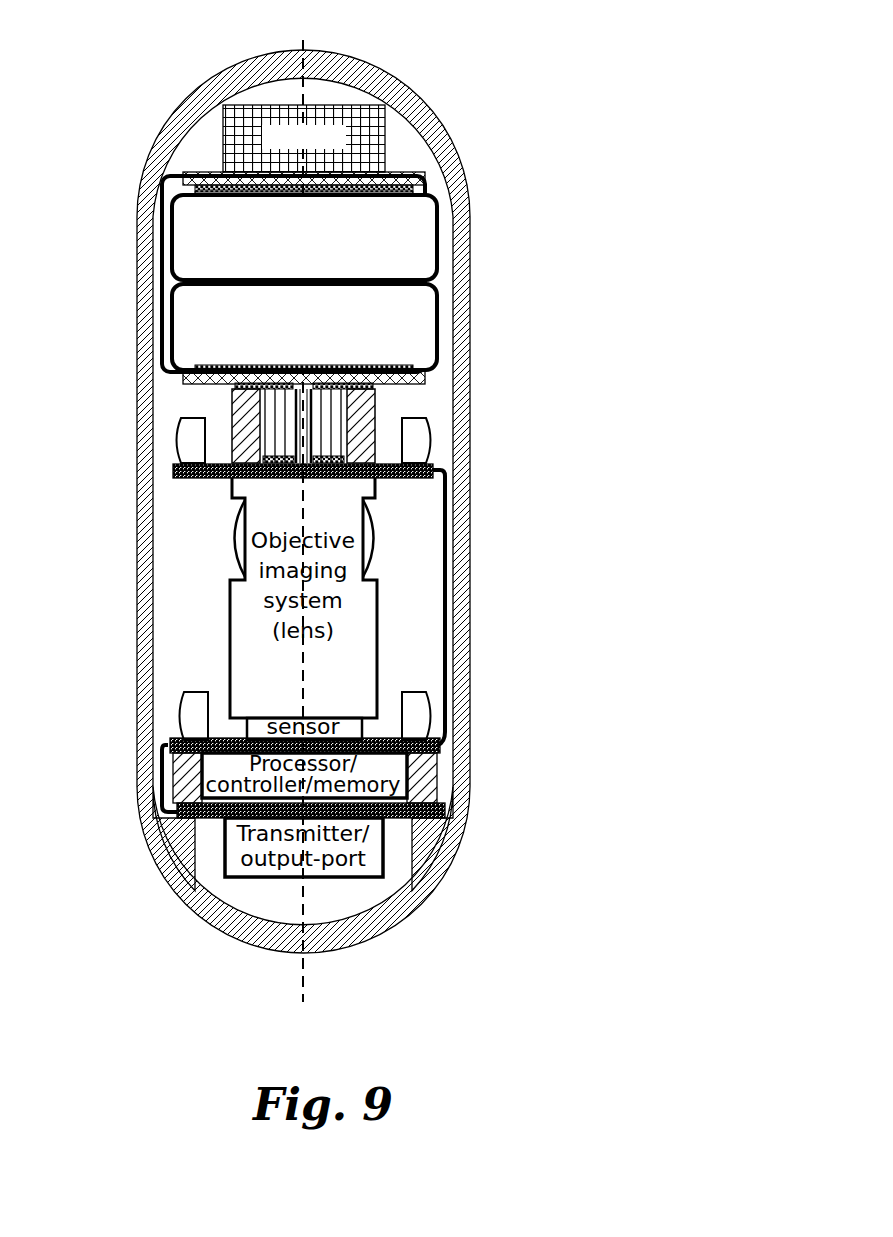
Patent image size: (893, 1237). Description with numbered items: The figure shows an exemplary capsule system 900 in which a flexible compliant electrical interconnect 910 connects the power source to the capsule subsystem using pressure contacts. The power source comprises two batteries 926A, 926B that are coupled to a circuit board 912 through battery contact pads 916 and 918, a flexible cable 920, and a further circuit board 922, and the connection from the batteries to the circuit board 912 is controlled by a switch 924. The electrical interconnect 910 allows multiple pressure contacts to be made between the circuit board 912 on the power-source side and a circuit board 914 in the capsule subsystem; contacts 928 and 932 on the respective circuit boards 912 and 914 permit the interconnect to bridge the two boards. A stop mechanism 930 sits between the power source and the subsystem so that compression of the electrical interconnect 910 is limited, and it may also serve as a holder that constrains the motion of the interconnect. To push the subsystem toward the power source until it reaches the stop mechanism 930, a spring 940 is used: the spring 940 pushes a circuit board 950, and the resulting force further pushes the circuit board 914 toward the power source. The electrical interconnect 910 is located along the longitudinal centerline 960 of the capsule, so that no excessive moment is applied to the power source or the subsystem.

The capsule system 900 is at (446, 76).
The flexible compliant electrical interconnect 910 is at (250, 445).
The circuit board 912 is at (428, 385).
The circuit board 914 is at (410, 478).
The battery contact pad 916 is at (400, 190).
The battery contact pad 918 is at (430, 377).
The flexible cable 920 is at (162, 262).
The circuit board 922 is at (428, 178).
The switch 924 is at (405, 140).
The battery 926A is at (440, 240).
The battery 926B is at (440, 325).
The contact 928 is at (235, 385).
The stop mechanism 930 is at (265, 420).
The contact 932 is at (268, 458).
The spring 940 is at (173, 775).
The circuit board 950 is at (445, 740).
The longitudinal centerline 960 is at (304, 984).